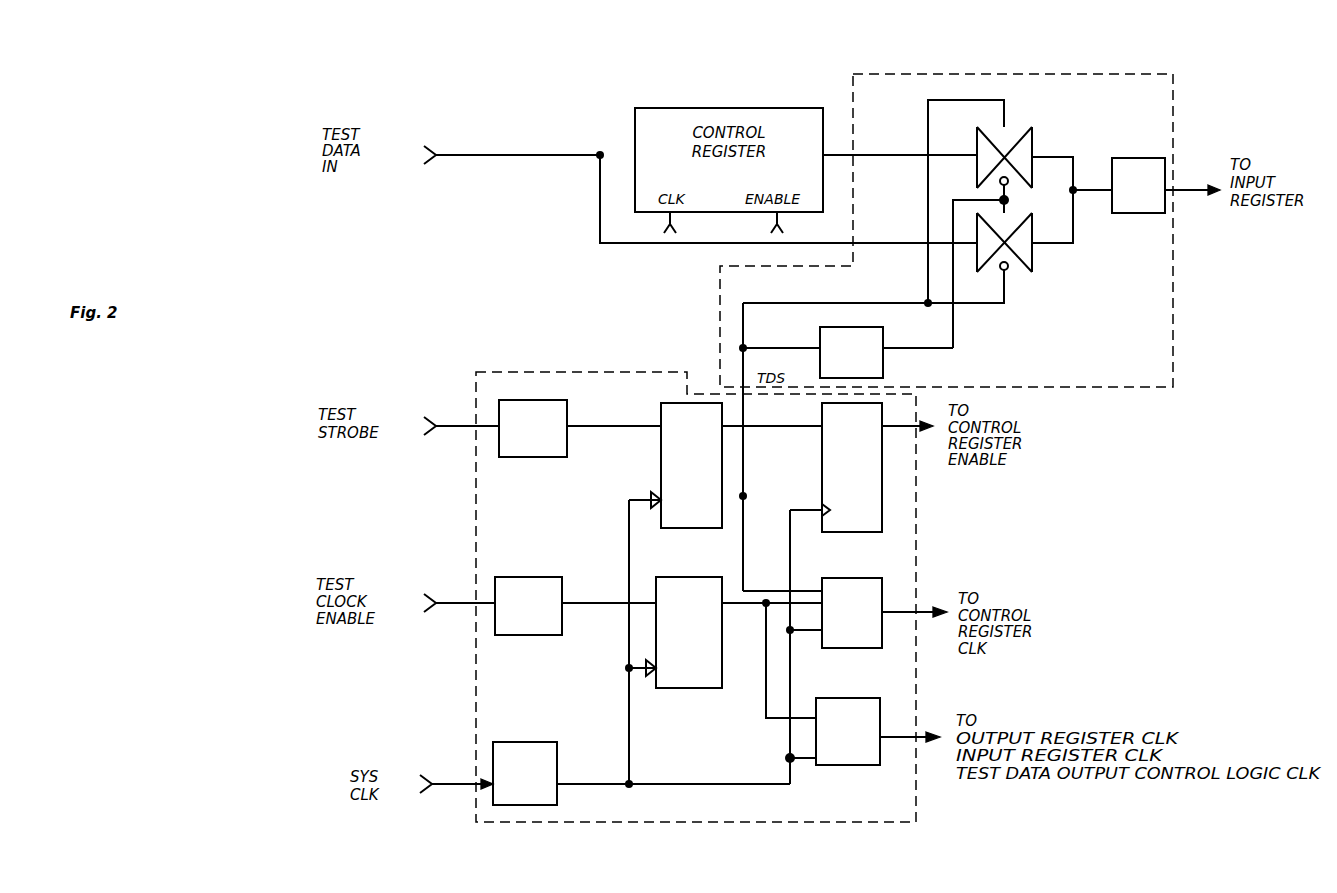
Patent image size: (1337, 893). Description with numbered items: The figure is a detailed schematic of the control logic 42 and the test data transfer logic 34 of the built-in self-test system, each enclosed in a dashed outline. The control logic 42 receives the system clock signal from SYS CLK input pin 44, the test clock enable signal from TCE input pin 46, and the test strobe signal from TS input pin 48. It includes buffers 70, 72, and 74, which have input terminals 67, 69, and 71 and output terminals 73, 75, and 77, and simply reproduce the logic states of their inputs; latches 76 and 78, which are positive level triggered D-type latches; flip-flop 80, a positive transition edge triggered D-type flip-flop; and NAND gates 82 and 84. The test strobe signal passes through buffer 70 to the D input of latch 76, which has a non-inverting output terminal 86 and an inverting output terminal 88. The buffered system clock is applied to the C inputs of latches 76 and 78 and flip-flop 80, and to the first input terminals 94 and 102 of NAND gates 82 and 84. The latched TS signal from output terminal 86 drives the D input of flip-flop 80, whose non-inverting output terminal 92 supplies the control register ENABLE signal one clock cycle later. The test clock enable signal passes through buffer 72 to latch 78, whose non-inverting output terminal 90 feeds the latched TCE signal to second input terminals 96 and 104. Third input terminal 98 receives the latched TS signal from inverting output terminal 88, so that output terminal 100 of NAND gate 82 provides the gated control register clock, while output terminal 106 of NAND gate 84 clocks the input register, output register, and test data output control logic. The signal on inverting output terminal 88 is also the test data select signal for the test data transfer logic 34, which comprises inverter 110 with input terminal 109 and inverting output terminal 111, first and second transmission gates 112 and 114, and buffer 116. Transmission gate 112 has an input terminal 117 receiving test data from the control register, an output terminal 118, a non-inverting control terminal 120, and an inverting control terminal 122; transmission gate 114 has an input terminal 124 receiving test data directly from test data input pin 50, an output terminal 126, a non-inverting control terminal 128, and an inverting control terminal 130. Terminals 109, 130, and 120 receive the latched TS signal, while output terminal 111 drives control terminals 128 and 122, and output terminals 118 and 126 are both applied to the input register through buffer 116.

The test data transfer logic 34 is at (720, 287).
The control logic 42 is at (574, 372).
The SYS CLK input pin 44 is at (430, 788).
The TCE input pin 46 is at (440, 610).
The TS input pin 48 is at (444, 430).
The test data input pin 50 is at (478, 158).
The input terminal 67 is at (494, 432).
The input terminal 69 is at (492, 608).
The buffer 70 is at (521, 448).
The input terminal 71 is at (490, 792).
The buffer 72 is at (516, 625).
The output terminal 73 is at (567, 428).
The buffer 74 is at (513, 791).
The output terminal 75 is at (562, 605).
The latch 76 is at (680, 469).
The output terminal 77 is at (558, 788).
The latch 78 is at (678, 639).
The flip-flop 80 is at (840, 469).
The NAND gate 82 is at (840, 634).
The NAND gate 84 is at (836, 755).
The non-inverting output terminal 86 is at (734, 432).
The inverting output terminal 88 is at (730, 492).
The non-inverting output terminal 90 is at (746, 600).
The non-inverting output terminal 92 is at (884, 428).
The first input terminal 94 is at (814, 634).
The second input terminal 96 is at (807, 612).
The third input terminal 98 is at (806, 590).
The output terminal 100 is at (884, 612).
The first input terminal 102 is at (798, 762).
The second input terminal 104 is at (802, 712).
The output terminal 106 is at (890, 738).
The input terminal 109 is at (818, 347).
The inverter 110 is at (839, 371).
The inverting output terminal 111 is at (886, 342).
The transmission gate 112 is at (994, 164).
The transmission gate 114 is at (994, 249).
The buffer 116 is at (1126, 205).
The input terminal 117 is at (977, 165).
The output terminal 118 is at (1036, 156).
The non-inverting control terminal 120 is at (1006, 126).
The inverting control terminal 122 is at (1008, 181).
The input terminal 124 is at (978, 240).
The output terminal 126 is at (1034, 244).
The non-inverting control terminal 128 is at (1010, 200).
The inverting control terminal 130 is at (1006, 270).